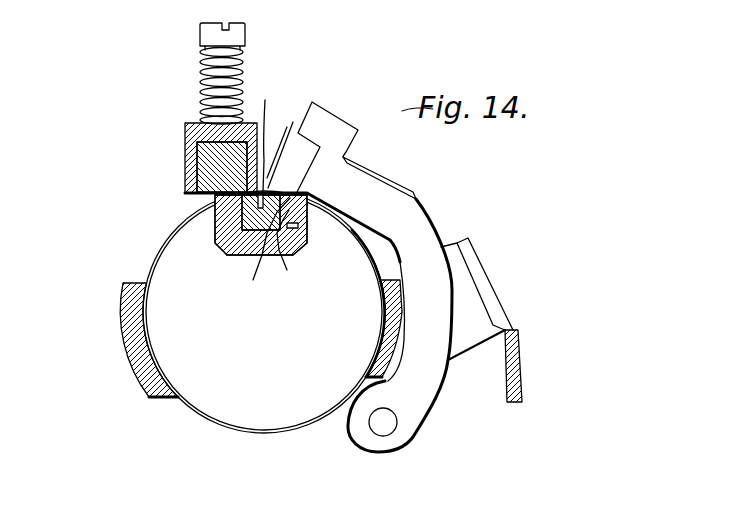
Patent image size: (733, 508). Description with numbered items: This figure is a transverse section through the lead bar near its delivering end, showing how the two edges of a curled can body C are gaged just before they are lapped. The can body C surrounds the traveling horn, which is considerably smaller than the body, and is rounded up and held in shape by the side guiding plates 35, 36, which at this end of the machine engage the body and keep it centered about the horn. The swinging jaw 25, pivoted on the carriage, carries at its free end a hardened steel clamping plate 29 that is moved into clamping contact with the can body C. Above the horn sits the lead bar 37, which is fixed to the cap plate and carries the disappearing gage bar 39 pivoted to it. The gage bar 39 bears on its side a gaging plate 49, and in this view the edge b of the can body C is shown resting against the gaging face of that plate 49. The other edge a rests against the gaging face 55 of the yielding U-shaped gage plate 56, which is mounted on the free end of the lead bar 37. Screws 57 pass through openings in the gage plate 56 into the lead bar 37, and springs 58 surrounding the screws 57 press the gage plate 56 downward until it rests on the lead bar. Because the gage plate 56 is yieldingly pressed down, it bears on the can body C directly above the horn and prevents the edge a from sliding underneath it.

The swinging jaw 25 is at (427, 245).
The hardened steel clamping plate 29 is at (295, 170).
The side guiding plate 35 is at (137, 360).
The side guiding plate 36 is at (382, 352).
The lead bar 37 is at (215, 167).
The gage bar 39 is at (300, 237).
The gaging plate 49 is at (293, 252).
The gaging face 55 is at (260, 135).
The yielding U-shaped gage plate 56 is at (188, 160).
The screw 57 is at (245, 32).
The spring 58 is at (243, 77).
The can body C is at (160, 250).
The edge of the can body a is at (281, 139).
The edge of the can body b is at (268, 250).